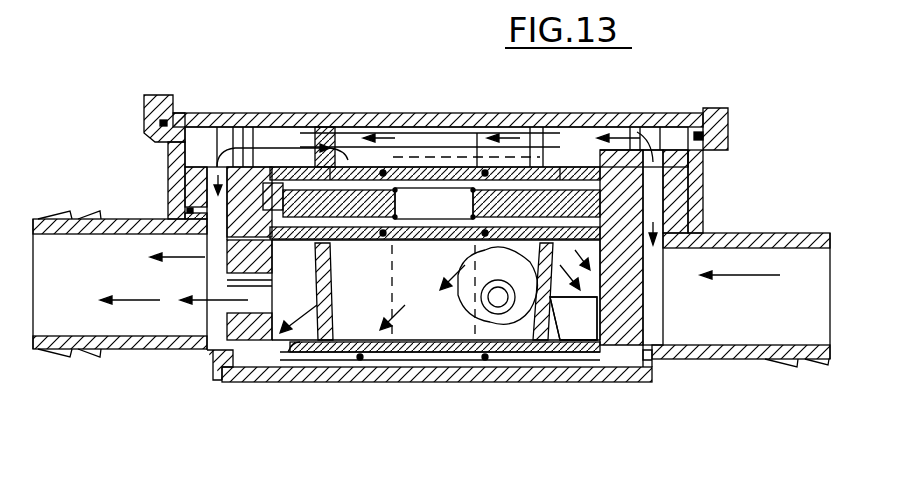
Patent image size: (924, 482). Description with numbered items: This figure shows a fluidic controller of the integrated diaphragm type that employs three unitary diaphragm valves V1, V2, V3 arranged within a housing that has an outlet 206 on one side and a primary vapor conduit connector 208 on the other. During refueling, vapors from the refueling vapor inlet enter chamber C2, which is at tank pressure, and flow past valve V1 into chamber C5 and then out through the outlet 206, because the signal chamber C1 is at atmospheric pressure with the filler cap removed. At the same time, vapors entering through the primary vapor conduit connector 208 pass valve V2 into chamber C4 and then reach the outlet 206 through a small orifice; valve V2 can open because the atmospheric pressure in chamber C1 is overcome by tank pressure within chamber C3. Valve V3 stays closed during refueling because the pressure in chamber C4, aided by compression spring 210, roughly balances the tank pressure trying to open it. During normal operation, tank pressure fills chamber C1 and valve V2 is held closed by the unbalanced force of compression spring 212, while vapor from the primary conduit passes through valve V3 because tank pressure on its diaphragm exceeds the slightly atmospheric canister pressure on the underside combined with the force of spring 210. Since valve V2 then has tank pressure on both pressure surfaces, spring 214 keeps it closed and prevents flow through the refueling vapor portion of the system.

The outlet 206 is at (95, 352).
The primary vapor conduit connector 208 is at (497, 300).
The compression spring 210 is at (513, 365).
The compression spring 212 is at (470, 250).
The spring 214 is at (487, 180).
The signal chamber C1 is at (357, 217).
The chamber C2 is at (440, 143).
The chamber C3 is at (372, 311).
The chamber C4 is at (600, 325).
The chamber C5 is at (262, 130).
The unitary diaphragm valve V1 is at (315, 163).
The unitary diaphragm valve V2 is at (595, 175).
The unitary diaphragm valve V3 is at (348, 355).